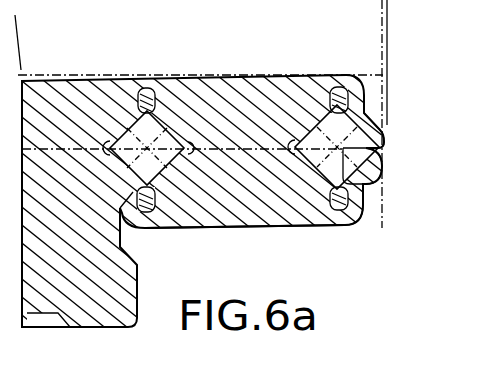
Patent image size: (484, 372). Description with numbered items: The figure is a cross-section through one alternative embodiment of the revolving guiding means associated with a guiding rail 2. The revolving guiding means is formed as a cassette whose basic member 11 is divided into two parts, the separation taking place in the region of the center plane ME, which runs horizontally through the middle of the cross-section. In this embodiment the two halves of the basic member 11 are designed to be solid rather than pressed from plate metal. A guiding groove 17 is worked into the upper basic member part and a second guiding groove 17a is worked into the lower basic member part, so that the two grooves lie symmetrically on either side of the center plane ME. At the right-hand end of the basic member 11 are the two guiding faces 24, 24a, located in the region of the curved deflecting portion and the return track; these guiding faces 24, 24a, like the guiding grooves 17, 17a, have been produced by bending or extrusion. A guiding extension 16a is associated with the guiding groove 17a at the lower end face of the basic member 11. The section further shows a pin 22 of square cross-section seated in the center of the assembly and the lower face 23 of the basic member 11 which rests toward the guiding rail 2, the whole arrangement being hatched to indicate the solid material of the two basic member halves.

The center plane ME is at (52, 153).
The guiding rail 2 is at (100, 246).
The basic member 11 is at (217, 107).
The guiding groove 17 is at (147, 88).
The guiding groove 17a is at (342, 203).
The square pin 22 is at (130, 157).
The lower face 23 is at (197, 198).
The guiding face 24 is at (352, 128).
The guiding face 24a is at (380, 149).
The guiding extension 16a is at (341, 207).